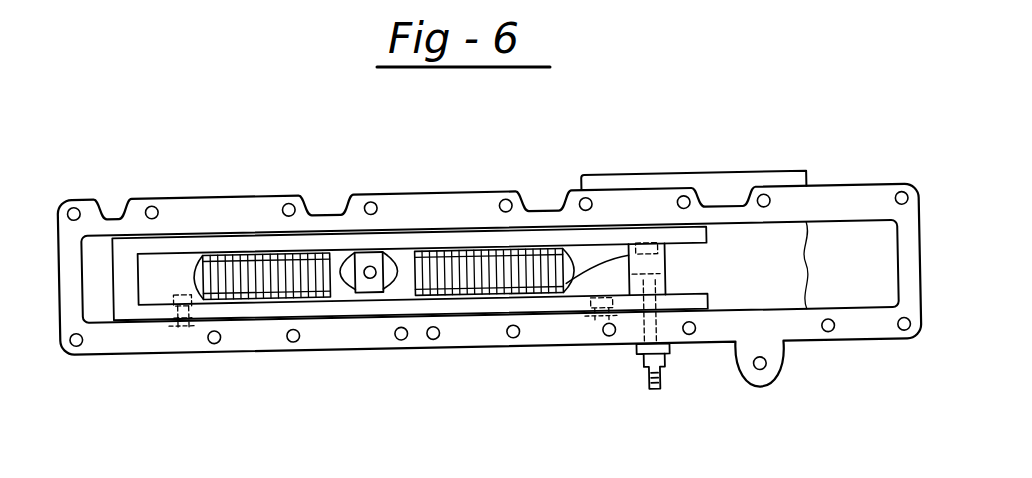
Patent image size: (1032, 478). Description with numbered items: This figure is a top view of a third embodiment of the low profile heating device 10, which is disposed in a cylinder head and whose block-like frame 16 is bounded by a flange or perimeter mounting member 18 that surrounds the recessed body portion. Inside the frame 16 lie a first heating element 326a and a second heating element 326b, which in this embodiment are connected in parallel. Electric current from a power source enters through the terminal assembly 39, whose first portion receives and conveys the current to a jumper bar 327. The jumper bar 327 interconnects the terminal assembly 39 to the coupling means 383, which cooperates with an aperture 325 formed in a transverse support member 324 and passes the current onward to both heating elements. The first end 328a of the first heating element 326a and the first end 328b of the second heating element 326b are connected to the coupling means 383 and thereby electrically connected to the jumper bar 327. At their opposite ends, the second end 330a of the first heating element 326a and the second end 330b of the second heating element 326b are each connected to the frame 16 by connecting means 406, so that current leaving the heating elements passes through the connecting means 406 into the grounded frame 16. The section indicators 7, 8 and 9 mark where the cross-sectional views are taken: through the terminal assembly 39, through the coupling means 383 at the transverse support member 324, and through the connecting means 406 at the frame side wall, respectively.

The heating device 10 is at (742, 138).
The frame 16 is at (822, 168).
The perimeter mounting member 18 is at (868, 197).
The terminal assembly 39 is at (677, 375).
The transverse support member 324 is at (367, 282).
The aperture 325 is at (366, 281).
The first heating element 326a is at (467, 248).
The second heating element 326b is at (270, 250).
The jumper bar 327 is at (572, 250).
The first end of first heating element 328a is at (397, 258).
The first end of second heating element 328b is at (351, 266).
The second end of first heating element 330a is at (592, 305).
The second end of second heating element 330b is at (188, 327).
The coupling means 383 is at (376, 300).
The connecting means 406 is at (163, 331).
The section line 7- 7 is at (645, 97).
The section line 8- 8 is at (368, 110).
The section line 9- 9 is at (175, 128).